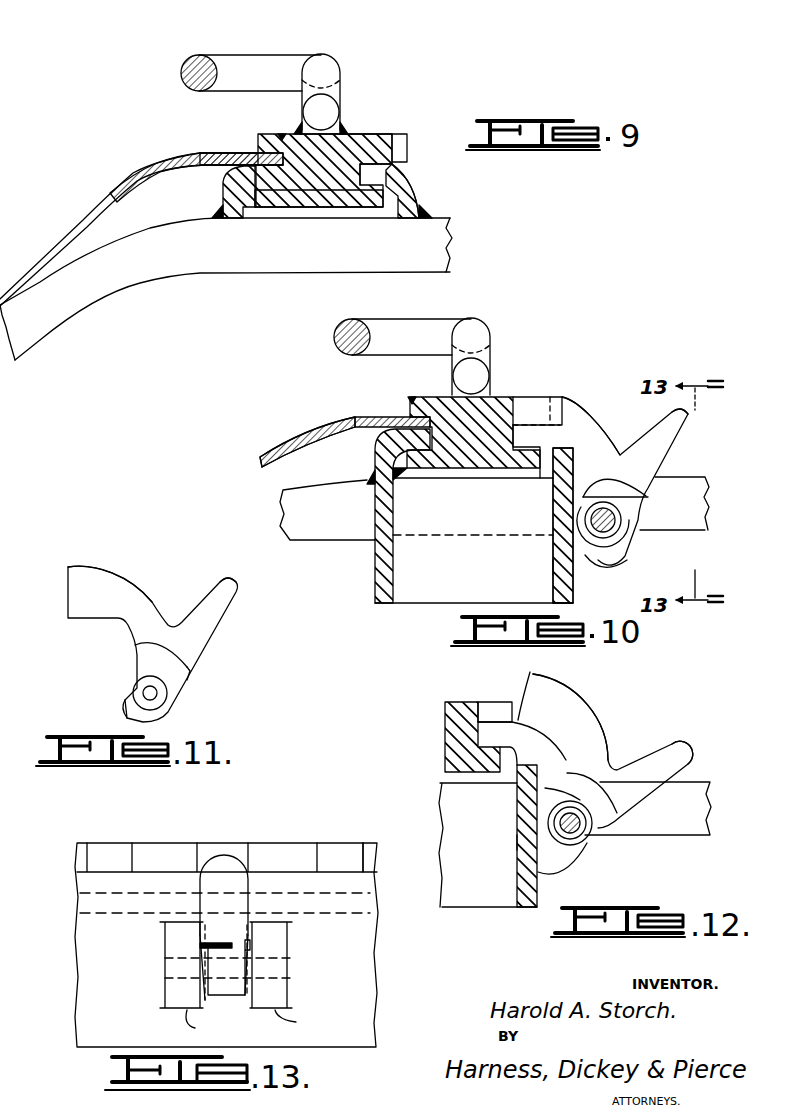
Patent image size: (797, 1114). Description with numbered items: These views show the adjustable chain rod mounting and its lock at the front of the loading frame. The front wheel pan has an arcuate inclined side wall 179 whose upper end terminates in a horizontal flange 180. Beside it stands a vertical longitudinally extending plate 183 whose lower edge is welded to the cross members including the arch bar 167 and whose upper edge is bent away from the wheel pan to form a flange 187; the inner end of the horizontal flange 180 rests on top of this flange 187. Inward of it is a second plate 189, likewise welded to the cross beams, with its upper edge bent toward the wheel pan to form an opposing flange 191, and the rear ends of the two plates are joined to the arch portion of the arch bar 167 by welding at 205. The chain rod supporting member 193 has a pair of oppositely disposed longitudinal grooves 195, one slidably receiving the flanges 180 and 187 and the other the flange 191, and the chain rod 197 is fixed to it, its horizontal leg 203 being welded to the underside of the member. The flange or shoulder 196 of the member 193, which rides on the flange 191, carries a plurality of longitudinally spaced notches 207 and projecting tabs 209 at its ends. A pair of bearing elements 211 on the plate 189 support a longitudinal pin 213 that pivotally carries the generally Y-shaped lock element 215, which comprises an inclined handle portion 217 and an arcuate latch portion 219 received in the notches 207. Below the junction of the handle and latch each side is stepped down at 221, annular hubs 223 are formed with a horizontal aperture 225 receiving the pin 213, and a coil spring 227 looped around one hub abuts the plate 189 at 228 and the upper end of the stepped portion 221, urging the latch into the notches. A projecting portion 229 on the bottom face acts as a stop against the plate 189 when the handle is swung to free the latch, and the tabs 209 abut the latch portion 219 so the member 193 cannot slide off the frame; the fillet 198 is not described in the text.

In FIG. 9, the arch bar 167 is at (185, 266).
In FIG. 10, the arch bar 167 is at (284, 492).
In FIG. 9, the inclined side wall 179 is at (108, 188).
In FIG. 10, the inclined side wall 179 is at (266, 448).
In FIG. 9, the horizontal flange 180 is at (218, 156).
In FIG. 10, the horizontal flange 180 is at (400, 414).
In FIG. 9, the vertical longitudinally extending plate 183 is at (242, 205).
In FIG. 10, the vertical longitudinally extending plate 183 is at (376, 576).
In FIG. 9, the flange 187 is at (258, 158).
In FIG. 10, the flange 187 is at (396, 428).
In FIG. 9, the second plate 189 is at (410, 192).
In FIG. 10, the second plate 189 is at (576, 590).
In FIG. 12, the second plate 189 is at (540, 902).
In FIG. 13, the second plate 189 is at (363, 968).
In FIG. 9, the flange 191 is at (394, 151).
In FIG. 10, the flange 191 is at (556, 428).
In FIG. 12, the flange 191 is at (531, 748).
In FIG. 9, the chain rod supporting member 193 is at (356, 131).
In FIG. 10, the chain rod supporting member 193 is at (520, 394).
In FIG. 12, the chain rod supporting member 193 is at (446, 700).
In FIG. 13, the chain rod supporting member 193 is at (166, 840).
In FIG. 9, the longitudinal grooves 195 is at (286, 196).
In FIG. 9, the flange or shoulder 196 is at (371, 133).
In FIG. 9, the chain rod 197 is at (256, 58).
In FIG. 10, the chain rod 197 is at (360, 319).
In FIG. 9, the fillet 198 is at (280, 134).
In FIG. 10, the fillet 198 is at (412, 400).
In FIG. 9, the horizontal leg 203 is at (323, 108).
In FIG. 10, the horizontal leg 203 is at (478, 372).
In FIG. 9, the weld 205 is at (217, 216).
In FIG. 9, the notches 207 is at (399, 135).
In FIG. 12, the notches 207 is at (481, 702).
In FIG. 13, the notches 207 is at (361, 845).
In FIG. 10, the projecting tabs 209 is at (552, 394).
In FIG. 12, the projecting tabs 209 is at (531, 674).
In FIG. 10, the bearing elements 211 is at (620, 563).
In FIG. 12, the bearing elements 211 is at (577, 866).
In FIG. 13, the bearing elements 211 is at (256, 1025).
In FIG. 13, the longitudinal pin 213 is at (270, 958).
In FIG. 10, the lock element 215 is at (619, 440).
In FIG. 11, the lock element 215 is at (147, 577).
In FIG. 12, the lock element 215 is at (611, 718).
In FIG. 13, the lock element 215 is at (234, 876).
In FIG. 10, the inclined handle portion 217 is at (682, 436).
In FIG. 11, the inclined handle portion 217 is at (218, 622).
In FIG. 12, the inclined handle portion 217 is at (690, 763).
In FIG. 13, the inclined handle portion 217 is at (226, 862).
In FIG. 10, the arcuate latch portion 219 is at (576, 408).
In FIG. 11, the arcuate latch portion 219 is at (72, 568).
In FIG. 12, the arcuate latch portion 219 is at (576, 692).
In FIG. 13, the arcuate latch portion 219 is at (205, 850).
In FIG. 10, the stepped down portion 221 is at (622, 488).
In FIG. 11, the stepped down portion 221 is at (192, 677).
In FIG. 12, the stepped down portion 221 is at (581, 793).
In FIG. 13, the stepped down portion 221 is at (280, 913).
In FIG. 11, the annular hubs 223 is at (186, 715).
In FIG. 10, the horizontal aperture 225 is at (618, 530).
In FIG. 11, the horizontal aperture 225 is at (148, 694).
In FIG. 12, the horizontal aperture 225 is at (575, 838).
In FIG. 10, the coil spring 227 is at (650, 500).
In FIG. 12, the coil spring 227 is at (602, 775).
In FIG. 13, the coil spring 227 is at (200, 960).
In FIG. 10, the spring abutment 228 is at (566, 552).
In FIG. 12, the spring abutment 228 is at (526, 840).
In FIG. 11, the projecting portion 229 is at (125, 714).